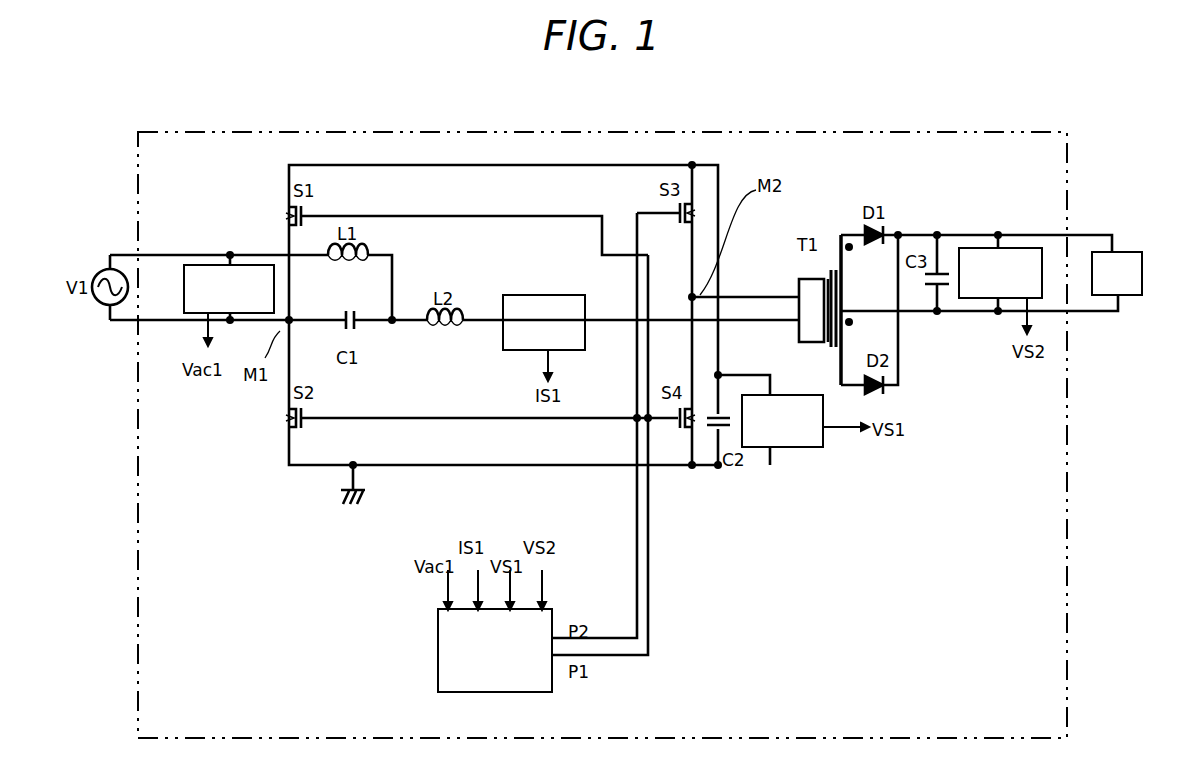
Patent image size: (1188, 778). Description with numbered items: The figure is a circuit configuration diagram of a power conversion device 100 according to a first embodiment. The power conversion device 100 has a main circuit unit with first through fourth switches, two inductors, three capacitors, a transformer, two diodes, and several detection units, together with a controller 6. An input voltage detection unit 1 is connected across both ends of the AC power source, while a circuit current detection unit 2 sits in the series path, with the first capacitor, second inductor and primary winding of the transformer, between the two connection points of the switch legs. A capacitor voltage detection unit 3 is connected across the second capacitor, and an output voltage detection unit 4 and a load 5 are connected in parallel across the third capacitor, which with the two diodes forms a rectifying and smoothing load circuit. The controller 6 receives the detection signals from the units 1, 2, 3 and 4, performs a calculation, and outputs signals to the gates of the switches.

The power conversion device 100 is at (645, 132).
The input voltage detection unit 1 is at (202, 265).
The circuit current detection unit 2 is at (533, 290).
The C2 voltage detection unit 3 is at (808, 450).
The output voltage detection unit 4 is at (985, 248).
The load 5 is at (1124, 248).
The controller 6 is at (485, 692).